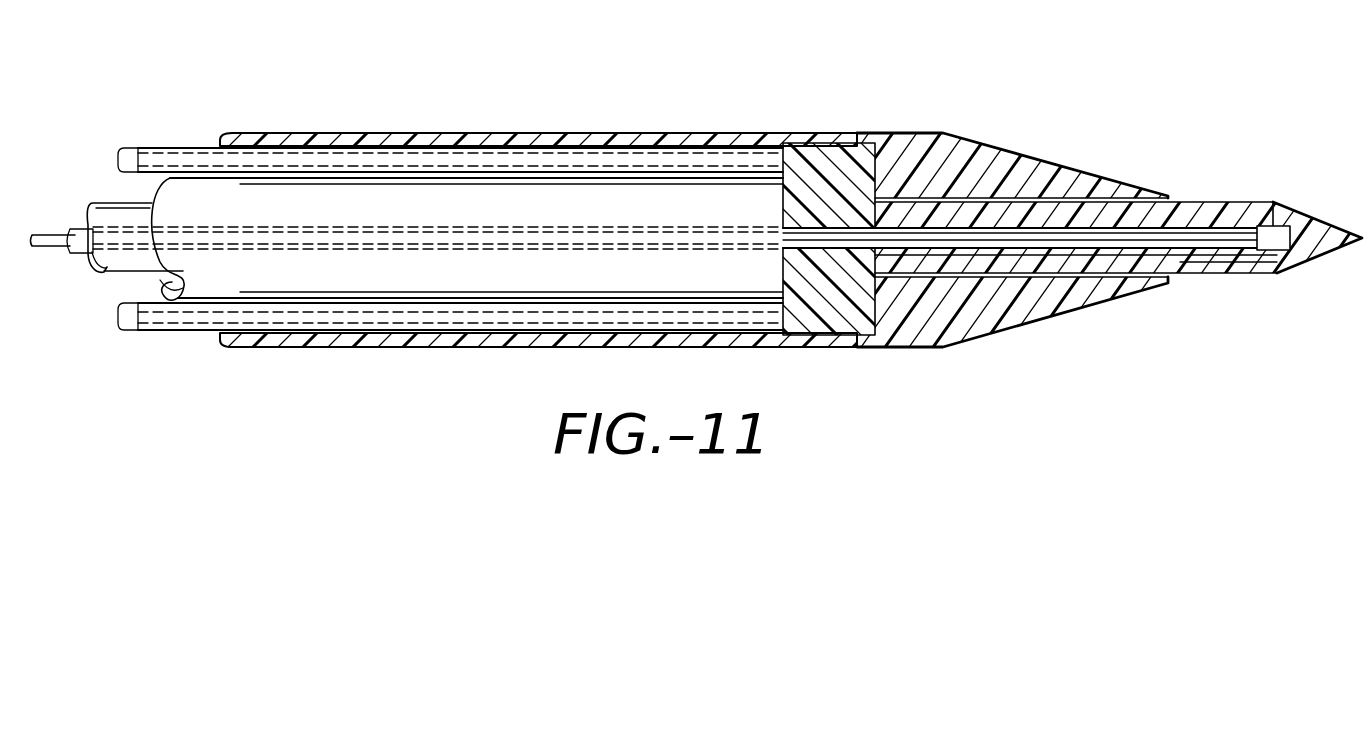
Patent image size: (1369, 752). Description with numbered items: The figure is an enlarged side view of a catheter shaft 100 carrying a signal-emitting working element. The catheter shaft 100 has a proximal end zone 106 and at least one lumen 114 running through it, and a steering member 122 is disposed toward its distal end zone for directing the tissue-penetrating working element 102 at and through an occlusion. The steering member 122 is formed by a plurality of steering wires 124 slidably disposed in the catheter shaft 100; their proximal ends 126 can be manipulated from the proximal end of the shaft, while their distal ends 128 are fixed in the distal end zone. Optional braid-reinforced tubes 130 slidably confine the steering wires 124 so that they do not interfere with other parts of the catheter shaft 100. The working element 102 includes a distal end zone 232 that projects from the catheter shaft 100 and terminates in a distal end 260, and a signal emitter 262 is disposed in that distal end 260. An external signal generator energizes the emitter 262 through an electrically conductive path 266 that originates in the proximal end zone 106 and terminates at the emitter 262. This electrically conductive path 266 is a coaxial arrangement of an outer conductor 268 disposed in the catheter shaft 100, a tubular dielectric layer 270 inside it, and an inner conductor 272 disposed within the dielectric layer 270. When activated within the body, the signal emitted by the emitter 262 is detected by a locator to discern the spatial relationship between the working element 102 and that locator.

The catheter shaft 100 is at (722, 133).
The working element 102 is at (1247, 228).
The proximal end zone 106 is at (277, 133).
The lumen 114 is at (160, 283).
The steering member 122 is at (628, 165).
The steering wires 124 is at (562, 153).
The proximal ends of steering wires 126 is at (118, 150).
The distal ends of steering wires 128 is at (778, 145).
The braid-reinforced tubes 130 is at (486, 150).
The distal end zone of inner shaft 232 is at (1205, 202).
The distal end of working element 260 is at (1353, 232).
The signal emitter 262 is at (1275, 226).
The electrically conductive path 266 is at (48, 248).
The outer conductor 268 is at (1240, 255).
The tubular dielectric layer 270 is at (1230, 250).
The inner conductor 272 is at (1199, 252).